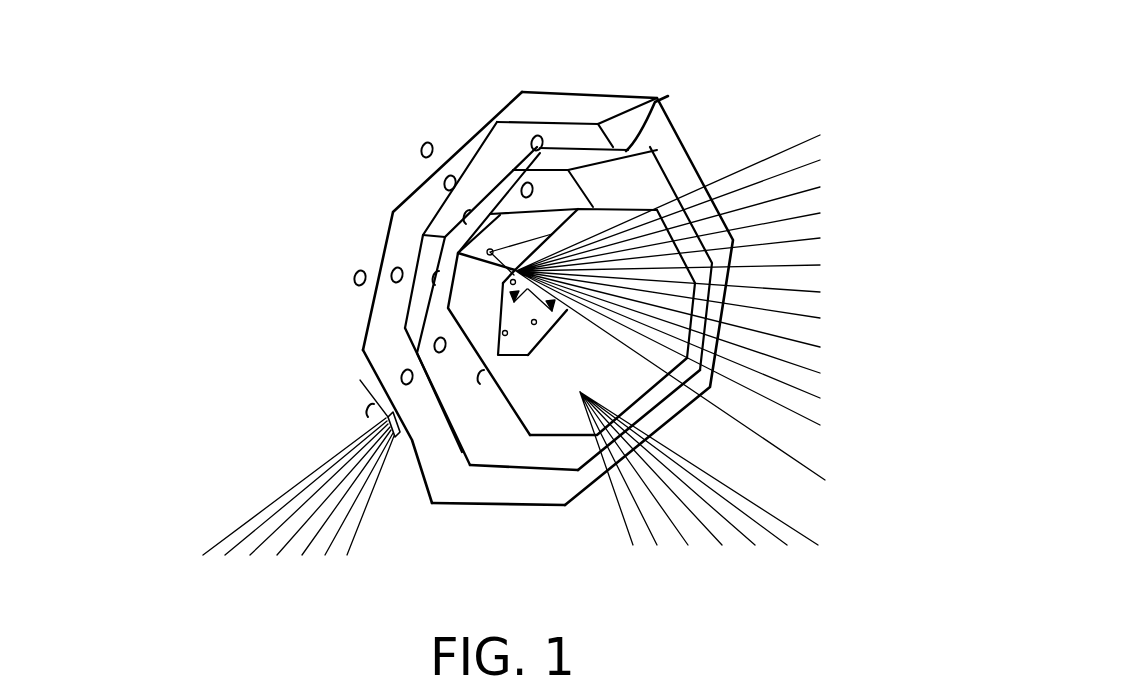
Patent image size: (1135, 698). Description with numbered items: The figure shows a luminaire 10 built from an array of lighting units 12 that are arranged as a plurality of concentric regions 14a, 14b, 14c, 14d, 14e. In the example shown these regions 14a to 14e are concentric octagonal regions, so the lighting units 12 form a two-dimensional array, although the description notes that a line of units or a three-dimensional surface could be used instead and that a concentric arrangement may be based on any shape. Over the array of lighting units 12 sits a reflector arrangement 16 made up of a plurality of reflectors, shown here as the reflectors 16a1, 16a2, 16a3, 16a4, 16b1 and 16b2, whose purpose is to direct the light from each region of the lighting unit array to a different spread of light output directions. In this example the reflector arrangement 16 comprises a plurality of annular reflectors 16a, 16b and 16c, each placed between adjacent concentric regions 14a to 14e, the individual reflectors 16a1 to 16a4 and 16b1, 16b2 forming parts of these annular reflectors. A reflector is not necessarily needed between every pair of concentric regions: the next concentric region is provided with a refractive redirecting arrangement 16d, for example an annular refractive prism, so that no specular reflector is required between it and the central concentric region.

The luminaire 10 is at (743, 108).
The lighting units 12 is at (420, 147).
The region 14a is at (343, 235).
The region 14b is at (470, 472).
The region 14c is at (508, 450).
The region 14d is at (570, 403).
The region 14e is at (525, 357).
The reflector arrangement 16 is at (596, 86).
The annular reflector 16a is at (506, 103).
The reflector 16a1 is at (556, 100).
The reflector 16a2 is at (738, 266).
The reflector 16a3 is at (488, 496).
The reflector 16a4 is at (363, 350).
The annular reflector 16b is at (460, 215).
The reflector 16b1 is at (676, 104).
The reflector 16b2 is at (655, 160).
The annular reflector 16c is at (465, 310).
The refractive redirecting arrangement 16d is at (540, 333).